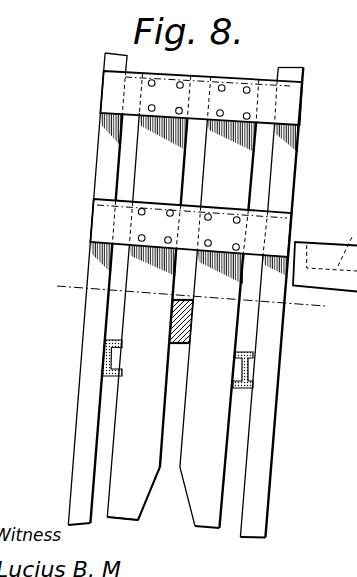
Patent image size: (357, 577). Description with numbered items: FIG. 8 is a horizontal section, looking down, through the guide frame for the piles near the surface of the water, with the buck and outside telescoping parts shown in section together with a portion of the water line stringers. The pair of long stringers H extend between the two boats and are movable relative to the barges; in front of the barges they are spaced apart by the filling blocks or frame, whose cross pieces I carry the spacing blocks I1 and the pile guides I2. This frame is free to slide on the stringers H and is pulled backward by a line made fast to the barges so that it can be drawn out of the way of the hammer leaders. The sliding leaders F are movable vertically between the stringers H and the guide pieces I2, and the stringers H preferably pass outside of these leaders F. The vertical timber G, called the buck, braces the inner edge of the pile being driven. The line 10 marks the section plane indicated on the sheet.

The cross piece I is at (294, 101).
The spacing block I1 is at (102, 196).
The pile guide I2 is at (303, 118).
The stringer H is at (75, 431).
The buck G is at (172, 319).
The sliding leader F is at (103, 358).
The section line 10- 10 is at (315, 325).